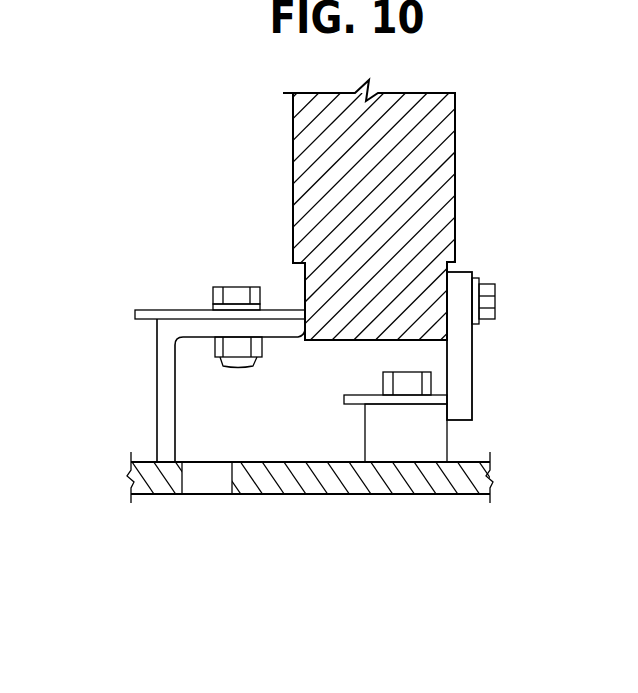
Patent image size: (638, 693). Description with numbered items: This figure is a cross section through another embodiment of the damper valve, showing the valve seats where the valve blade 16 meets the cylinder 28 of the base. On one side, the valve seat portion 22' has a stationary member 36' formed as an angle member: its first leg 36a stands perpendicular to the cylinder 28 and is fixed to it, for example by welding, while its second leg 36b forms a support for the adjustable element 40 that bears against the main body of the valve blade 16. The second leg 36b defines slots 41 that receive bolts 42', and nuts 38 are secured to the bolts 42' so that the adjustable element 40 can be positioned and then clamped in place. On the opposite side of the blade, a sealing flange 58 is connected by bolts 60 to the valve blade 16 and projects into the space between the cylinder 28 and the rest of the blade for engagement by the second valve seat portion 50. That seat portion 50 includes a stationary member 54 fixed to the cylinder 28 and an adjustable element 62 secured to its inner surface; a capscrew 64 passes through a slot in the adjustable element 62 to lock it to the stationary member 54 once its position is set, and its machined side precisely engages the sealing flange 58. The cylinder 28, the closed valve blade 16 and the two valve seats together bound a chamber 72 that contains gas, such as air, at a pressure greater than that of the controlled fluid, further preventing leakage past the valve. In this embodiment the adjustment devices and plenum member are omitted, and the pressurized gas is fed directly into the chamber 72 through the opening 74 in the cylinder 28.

The valve blade 16 is at (437, 146).
The valve seat portion 22' is at (224, 295).
The cylinder 28 is at (314, 497).
The stationary member 36' is at (183, 390).
The first leg 36a is at (195, 390).
The second leg 36b is at (203, 328).
The nut 38 is at (258, 345).
The adjustable element 40 is at (140, 310).
The slot 41 is at (188, 308).
The bolt 42' is at (236, 272).
The valve seat portion 50 is at (431, 367).
The stationary member 54 is at (375, 430).
The sealing flange 58 is at (474, 368).
The bolt 60 is at (497, 300).
The adjustable element 62 is at (358, 394).
The capscrew 64 is at (407, 377).
The chamber 72 is at (288, 441).
The opening 74 is at (190, 489).